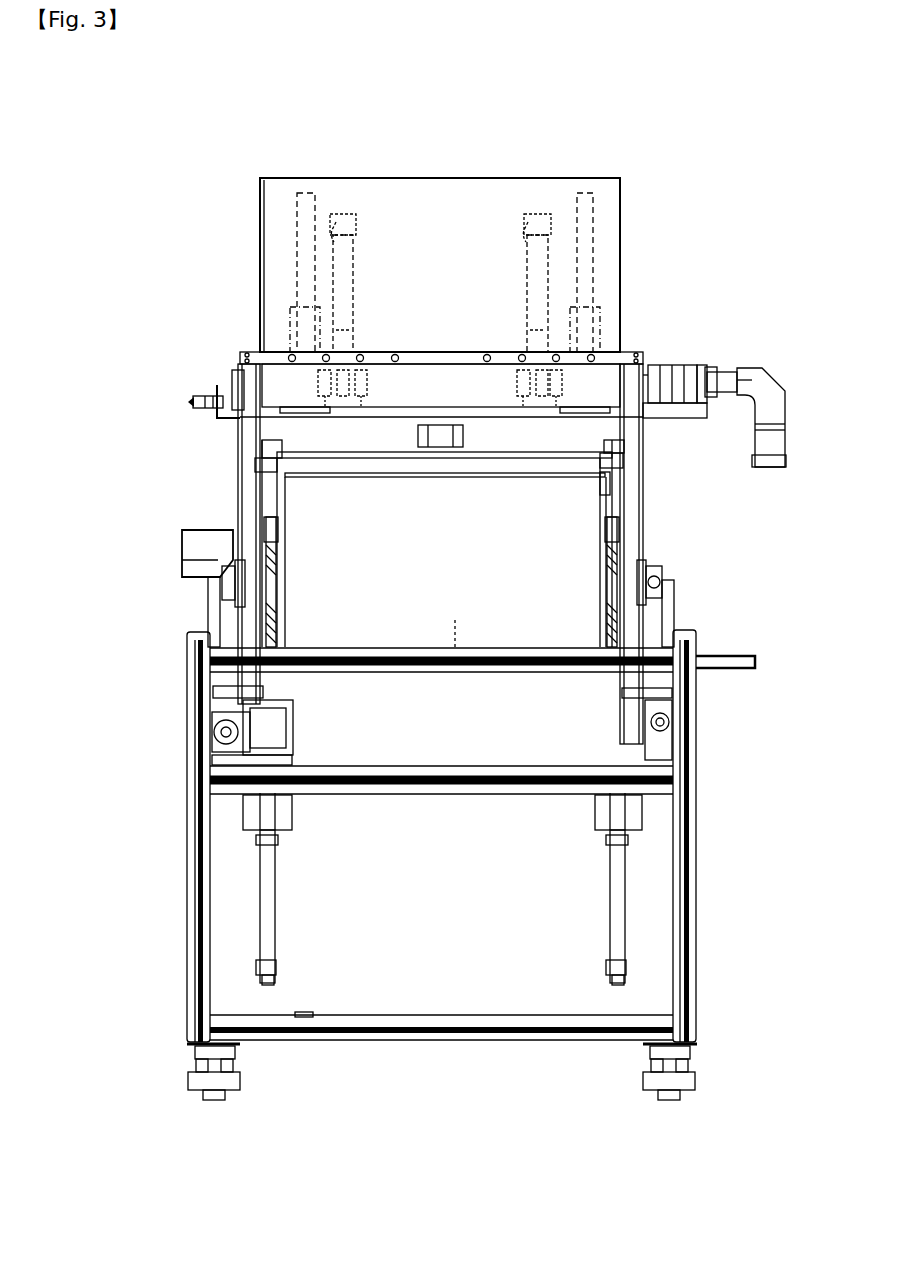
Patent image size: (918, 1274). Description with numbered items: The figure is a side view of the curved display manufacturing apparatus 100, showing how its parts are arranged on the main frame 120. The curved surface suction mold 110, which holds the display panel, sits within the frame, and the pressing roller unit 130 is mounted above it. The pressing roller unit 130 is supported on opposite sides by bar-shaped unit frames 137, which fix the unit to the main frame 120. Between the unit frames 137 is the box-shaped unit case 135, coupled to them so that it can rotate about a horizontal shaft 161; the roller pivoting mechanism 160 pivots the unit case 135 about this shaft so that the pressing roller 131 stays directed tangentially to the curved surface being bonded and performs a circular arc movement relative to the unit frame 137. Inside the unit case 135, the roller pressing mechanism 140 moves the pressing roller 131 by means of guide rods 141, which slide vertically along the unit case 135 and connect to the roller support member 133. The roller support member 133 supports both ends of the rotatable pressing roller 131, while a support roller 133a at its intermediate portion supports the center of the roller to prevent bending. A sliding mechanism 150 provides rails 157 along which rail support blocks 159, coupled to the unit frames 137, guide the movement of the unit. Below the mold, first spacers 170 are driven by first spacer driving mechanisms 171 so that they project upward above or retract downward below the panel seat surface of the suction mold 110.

The curved display manufacturing apparatus 100 is at (138, 172).
The curved surface suction mold 110 is at (455, 620).
The main frame 120 is at (690, 890).
The pressing roller unit 130 is at (638, 244).
The pressing roller 131 is at (253, 435).
The roller support member 133 is at (232, 382).
The support roller 133a is at (440, 430).
The unit case 135 is at (452, 197).
The unit frame 137 is at (635, 487).
The roller pressing mechanism 140 is at (353, 265).
The guide rod 141 is at (303, 222).
The sliding mechanism 150 is at (210, 750).
The rail 157 is at (665, 580).
The rail support block 159 is at (648, 562).
The roller pivoting mechanism 160 is at (740, 370).
The horizontal shaft 161 is at (655, 375).
The first spacer 170 is at (262, 527).
The first spacer driving mechanism 171 is at (268, 890).